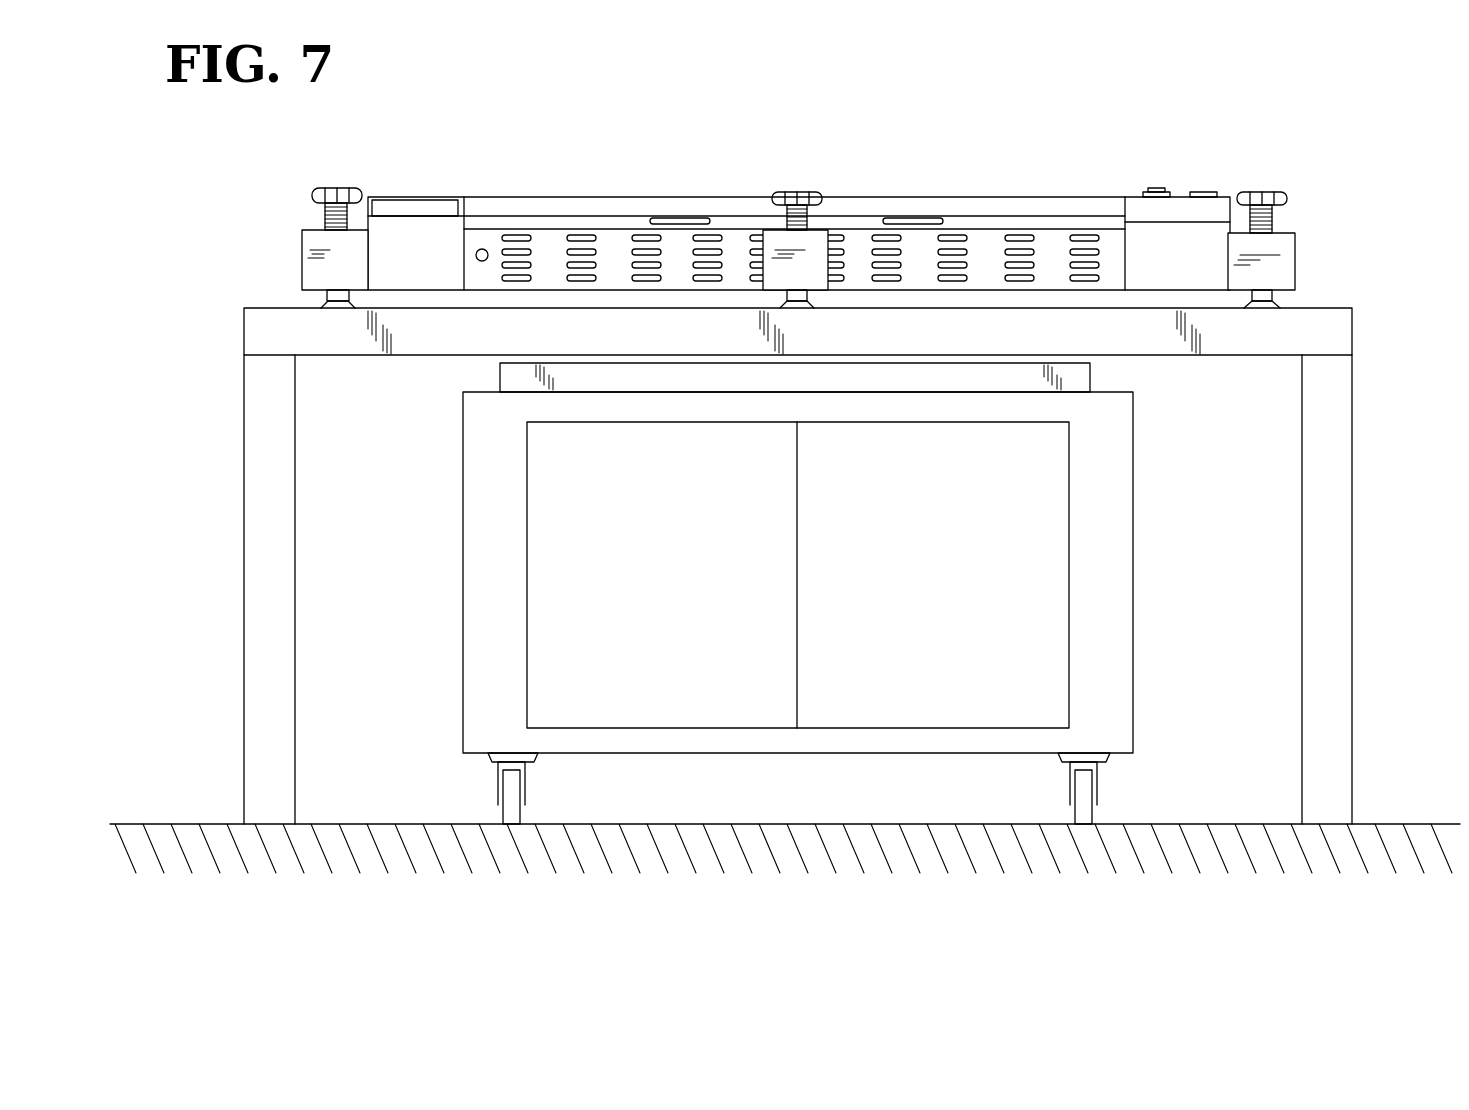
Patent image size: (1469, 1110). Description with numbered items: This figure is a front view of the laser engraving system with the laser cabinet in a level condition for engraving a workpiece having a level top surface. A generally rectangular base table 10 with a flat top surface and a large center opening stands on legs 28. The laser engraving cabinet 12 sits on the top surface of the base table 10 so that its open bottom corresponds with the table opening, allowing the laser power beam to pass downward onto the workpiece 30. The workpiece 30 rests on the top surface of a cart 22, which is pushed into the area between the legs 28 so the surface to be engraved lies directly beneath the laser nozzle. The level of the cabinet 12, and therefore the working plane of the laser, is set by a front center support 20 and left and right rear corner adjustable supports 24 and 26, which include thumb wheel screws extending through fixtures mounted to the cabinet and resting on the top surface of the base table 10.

The base table 10 is at (750, 566).
The laser engraving cabinet 12 is at (612, 197).
The front center support 20 is at (797, 192).
The cart 22 is at (486, 571).
The left rear corner adjustable support 24 is at (333, 190).
The right rear corner adjustable support 26 is at (1265, 192).
The legs 28 is at (1318, 636).
The workpiece 30 is at (500, 372).